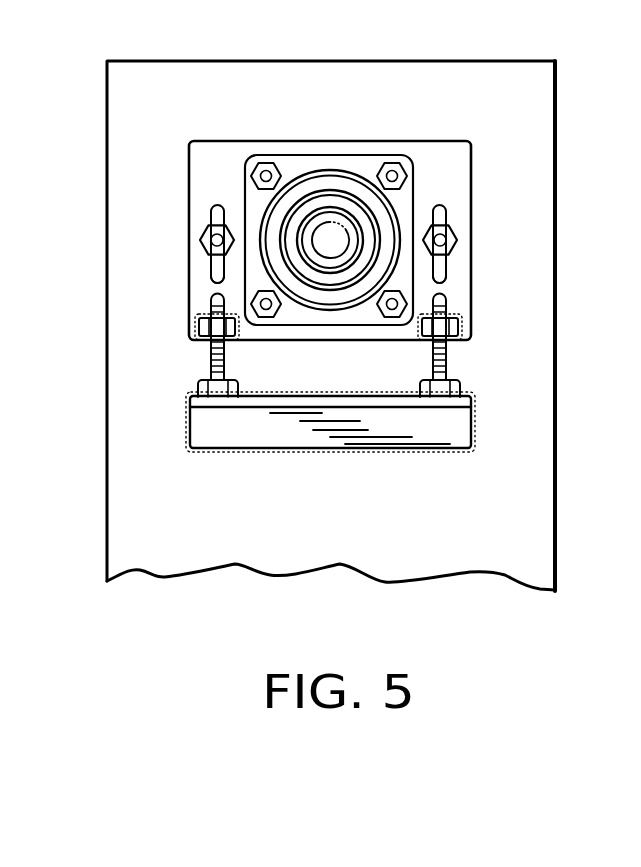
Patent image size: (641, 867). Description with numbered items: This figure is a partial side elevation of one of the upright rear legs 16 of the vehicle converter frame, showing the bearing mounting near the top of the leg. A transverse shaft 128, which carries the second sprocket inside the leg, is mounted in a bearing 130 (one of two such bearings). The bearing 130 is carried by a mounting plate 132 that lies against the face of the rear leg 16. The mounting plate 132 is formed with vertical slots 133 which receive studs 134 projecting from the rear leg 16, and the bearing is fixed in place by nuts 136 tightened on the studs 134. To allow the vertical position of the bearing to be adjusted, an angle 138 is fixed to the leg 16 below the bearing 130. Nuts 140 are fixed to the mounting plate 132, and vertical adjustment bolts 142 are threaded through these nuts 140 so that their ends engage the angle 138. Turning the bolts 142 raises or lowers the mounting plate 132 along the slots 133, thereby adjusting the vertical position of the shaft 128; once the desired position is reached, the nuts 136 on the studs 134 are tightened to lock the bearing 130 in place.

The rear leg 16 is at (528, 520).
The transverse shaft 128 is at (318, 235).
The bearing 130 is at (336, 194).
The mounting plate 132 is at (186, 145).
The vertical slot 133 is at (212, 211).
The stud 134 is at (212, 240).
The nut 136 is at (212, 270).
The angle 138 is at (251, 417).
The nut 140 is at (196, 324).
The vertical adjustment bolt 142 is at (208, 365).